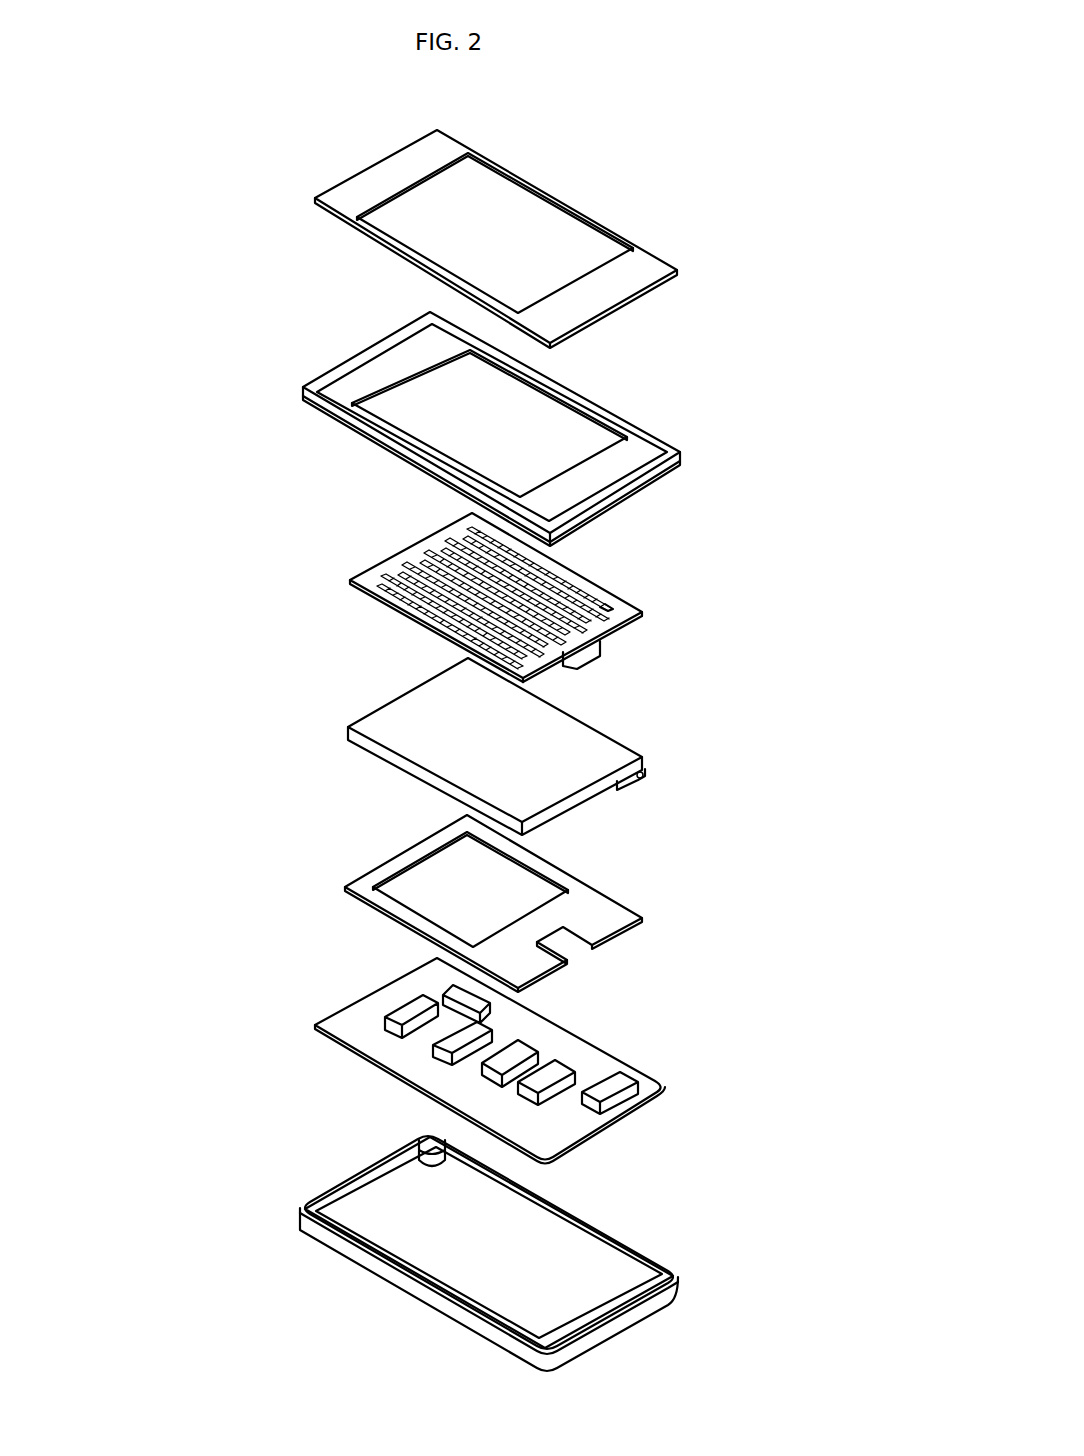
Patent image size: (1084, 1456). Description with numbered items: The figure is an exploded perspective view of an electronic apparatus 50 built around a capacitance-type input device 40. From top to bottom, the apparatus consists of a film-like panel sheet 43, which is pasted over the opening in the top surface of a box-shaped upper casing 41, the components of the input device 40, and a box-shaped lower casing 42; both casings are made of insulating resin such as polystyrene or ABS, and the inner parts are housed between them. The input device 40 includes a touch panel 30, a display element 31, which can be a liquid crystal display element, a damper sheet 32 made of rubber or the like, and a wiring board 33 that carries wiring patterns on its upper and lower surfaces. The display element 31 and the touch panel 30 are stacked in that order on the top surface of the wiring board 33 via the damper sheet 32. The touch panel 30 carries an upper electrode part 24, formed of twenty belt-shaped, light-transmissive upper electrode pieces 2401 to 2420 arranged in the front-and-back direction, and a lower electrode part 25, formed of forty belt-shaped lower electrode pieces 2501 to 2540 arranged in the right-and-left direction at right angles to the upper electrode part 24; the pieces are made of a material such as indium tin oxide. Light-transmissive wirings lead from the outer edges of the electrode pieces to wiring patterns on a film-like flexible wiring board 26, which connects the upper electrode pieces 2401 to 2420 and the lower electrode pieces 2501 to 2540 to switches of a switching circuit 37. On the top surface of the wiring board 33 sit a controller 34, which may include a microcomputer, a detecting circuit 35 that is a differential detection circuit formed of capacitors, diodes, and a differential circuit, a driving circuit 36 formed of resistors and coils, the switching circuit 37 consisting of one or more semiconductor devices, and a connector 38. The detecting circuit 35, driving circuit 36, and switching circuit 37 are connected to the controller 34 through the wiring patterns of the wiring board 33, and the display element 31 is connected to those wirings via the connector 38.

The electronic apparatus 50 is at (192, 129).
The input device 40 is at (803, 462).
The panel sheet 43 is at (572, 208).
The upper casing 41 is at (650, 427).
The touch panel 30 is at (595, 572).
The lower electrode part 25 is at (216, 538).
The lower electrode piece 2501 is at (367, 582).
The lower electrode piece 2540 is at (463, 650).
The upper electrode part 24 is at (747, 561).
The upper electrode piece 2420 is at (620, 600).
The upper electrode piece 2401 is at (600, 643).
The flexible wiring board 26 is at (592, 657).
The display element 31 is at (578, 770).
The damper sheet 32 is at (620, 903).
The wiring board 33 is at (615, 1057).
The controller 34 is at (620, 1085).
The detecting circuit 35 is at (550, 1097).
The driving circuit 36 is at (523, 1055).
The switching circuit 37 is at (472, 1037).
The connector 38 is at (397, 1005).
The lower casing 42 is at (358, 1172).